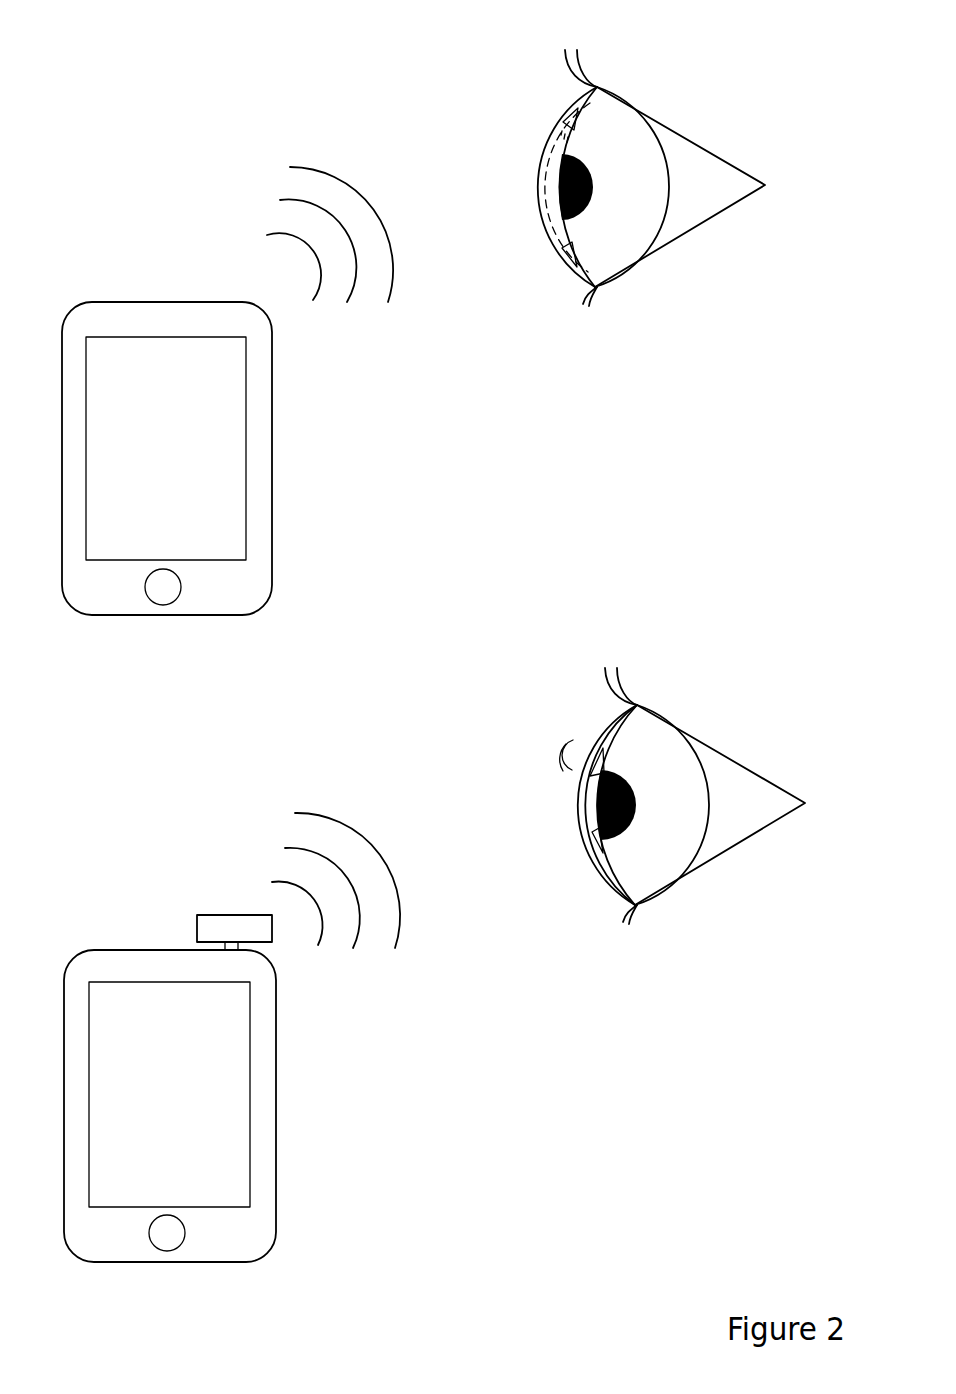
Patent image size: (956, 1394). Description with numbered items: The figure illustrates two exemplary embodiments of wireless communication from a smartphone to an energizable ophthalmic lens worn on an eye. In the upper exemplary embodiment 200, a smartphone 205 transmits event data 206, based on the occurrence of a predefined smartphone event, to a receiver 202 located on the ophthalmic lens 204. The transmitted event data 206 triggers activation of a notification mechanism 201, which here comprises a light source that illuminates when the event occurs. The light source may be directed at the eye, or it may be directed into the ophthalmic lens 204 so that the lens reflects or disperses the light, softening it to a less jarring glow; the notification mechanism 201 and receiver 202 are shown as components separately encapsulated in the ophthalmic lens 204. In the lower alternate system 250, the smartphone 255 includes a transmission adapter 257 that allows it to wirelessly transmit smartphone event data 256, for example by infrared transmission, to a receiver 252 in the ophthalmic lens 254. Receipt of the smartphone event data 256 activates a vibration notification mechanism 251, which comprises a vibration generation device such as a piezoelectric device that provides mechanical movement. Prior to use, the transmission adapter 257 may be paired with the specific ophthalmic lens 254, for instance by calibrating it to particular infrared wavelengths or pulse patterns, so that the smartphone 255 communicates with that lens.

The exemplary embodiment 200 is at (413, 323).
The notification mechanism 201 is at (563, 121).
The receiver 202 is at (563, 255).
The ophthalmic lens 204 is at (587, 277).
The smartphone 205 is at (263, 445).
The event data 206 is at (290, 188).
The system 250 is at (434, 987).
The vibration notification mechanism 251 is at (598, 768).
The receiver 252 is at (597, 847).
The ophthalmic lens 254 is at (627, 890).
The smartphone 255 is at (272, 1120).
The smartphone event data 256 is at (298, 867).
The transmission adapter 257 is at (197, 927).